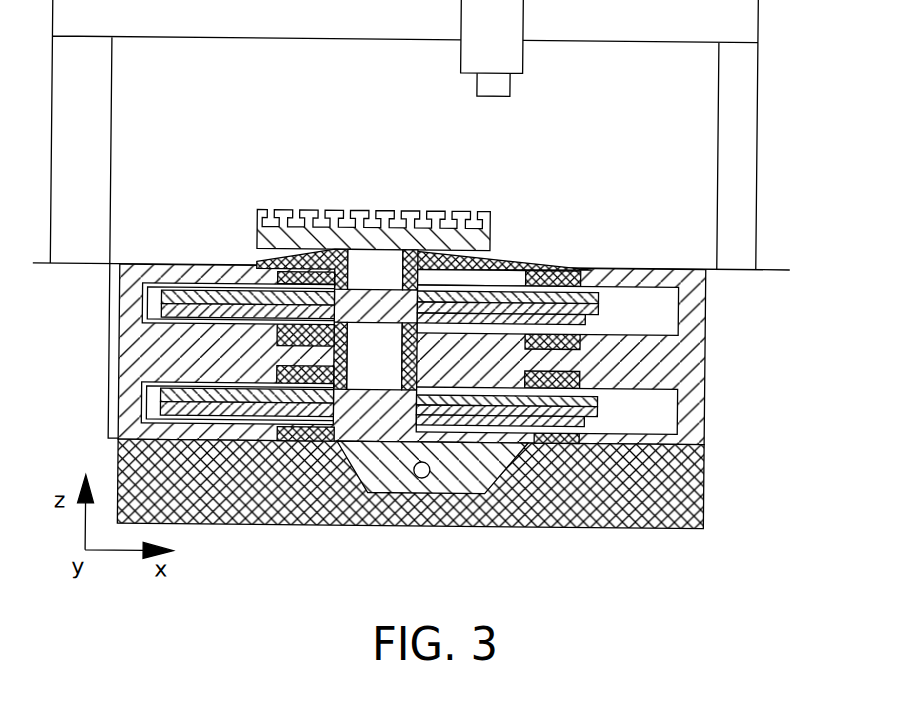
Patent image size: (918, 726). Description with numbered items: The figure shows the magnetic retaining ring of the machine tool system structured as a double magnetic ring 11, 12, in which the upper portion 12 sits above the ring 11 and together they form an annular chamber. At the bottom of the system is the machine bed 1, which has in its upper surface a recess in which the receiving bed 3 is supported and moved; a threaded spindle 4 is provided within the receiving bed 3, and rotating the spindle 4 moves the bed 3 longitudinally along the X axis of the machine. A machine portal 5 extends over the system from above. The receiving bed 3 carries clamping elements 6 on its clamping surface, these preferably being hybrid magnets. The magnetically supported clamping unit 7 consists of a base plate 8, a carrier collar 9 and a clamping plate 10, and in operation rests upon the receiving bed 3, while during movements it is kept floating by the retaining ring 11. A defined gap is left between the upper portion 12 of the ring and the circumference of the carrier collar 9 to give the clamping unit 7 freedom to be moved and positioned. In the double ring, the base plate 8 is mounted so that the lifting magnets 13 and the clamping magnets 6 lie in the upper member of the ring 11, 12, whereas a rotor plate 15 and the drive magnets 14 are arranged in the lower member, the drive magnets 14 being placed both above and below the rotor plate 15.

The machine bed 1 is at (240, 507).
The receiving bed 3 is at (367, 475).
The threaded spindle 4 is at (430, 480).
The machine portal 5 is at (694, 27).
The clamping elements 6 is at (585, 340).
The clamping unit 7 is at (167, 86).
The base plate 8 is at (196, 307).
The carrier collar 9 is at (298, 214).
The clamping plate 10 is at (346, 215).
The magnetic retaining ring 11 is at (476, 355).
The upper portion of the magnetic retaining ring 12 is at (695, 317).
The lifting magnets 13 is at (591, 271).
The driving magnets 14 is at (573, 442).
The rotor plate 15 is at (508, 415).